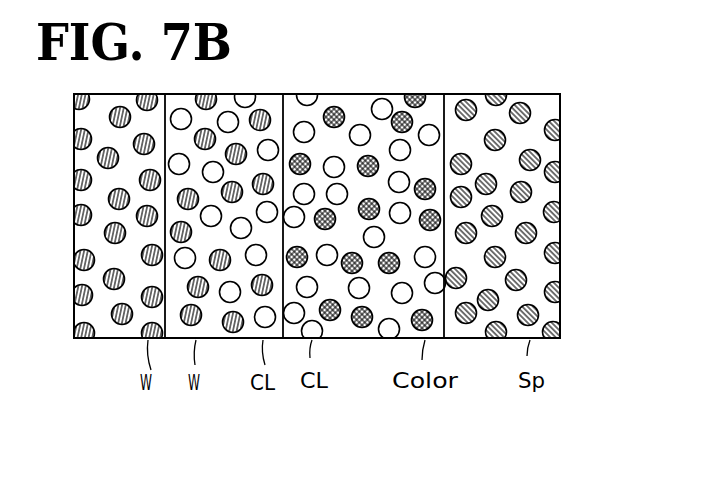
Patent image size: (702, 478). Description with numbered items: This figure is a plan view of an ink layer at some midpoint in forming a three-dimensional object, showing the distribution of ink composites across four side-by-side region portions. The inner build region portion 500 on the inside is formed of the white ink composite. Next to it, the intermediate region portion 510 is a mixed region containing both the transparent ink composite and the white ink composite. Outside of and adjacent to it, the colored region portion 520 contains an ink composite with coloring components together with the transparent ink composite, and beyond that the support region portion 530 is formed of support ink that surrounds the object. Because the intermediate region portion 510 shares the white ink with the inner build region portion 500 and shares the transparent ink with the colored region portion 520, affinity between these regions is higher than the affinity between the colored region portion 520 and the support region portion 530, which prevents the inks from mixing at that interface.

The inner build region portion 500 is at (107, 340).
The intermediate region portion 510 is at (232, 340).
The colored region portion 520 is at (364, 340).
The support region portion 530 is at (494, 340).